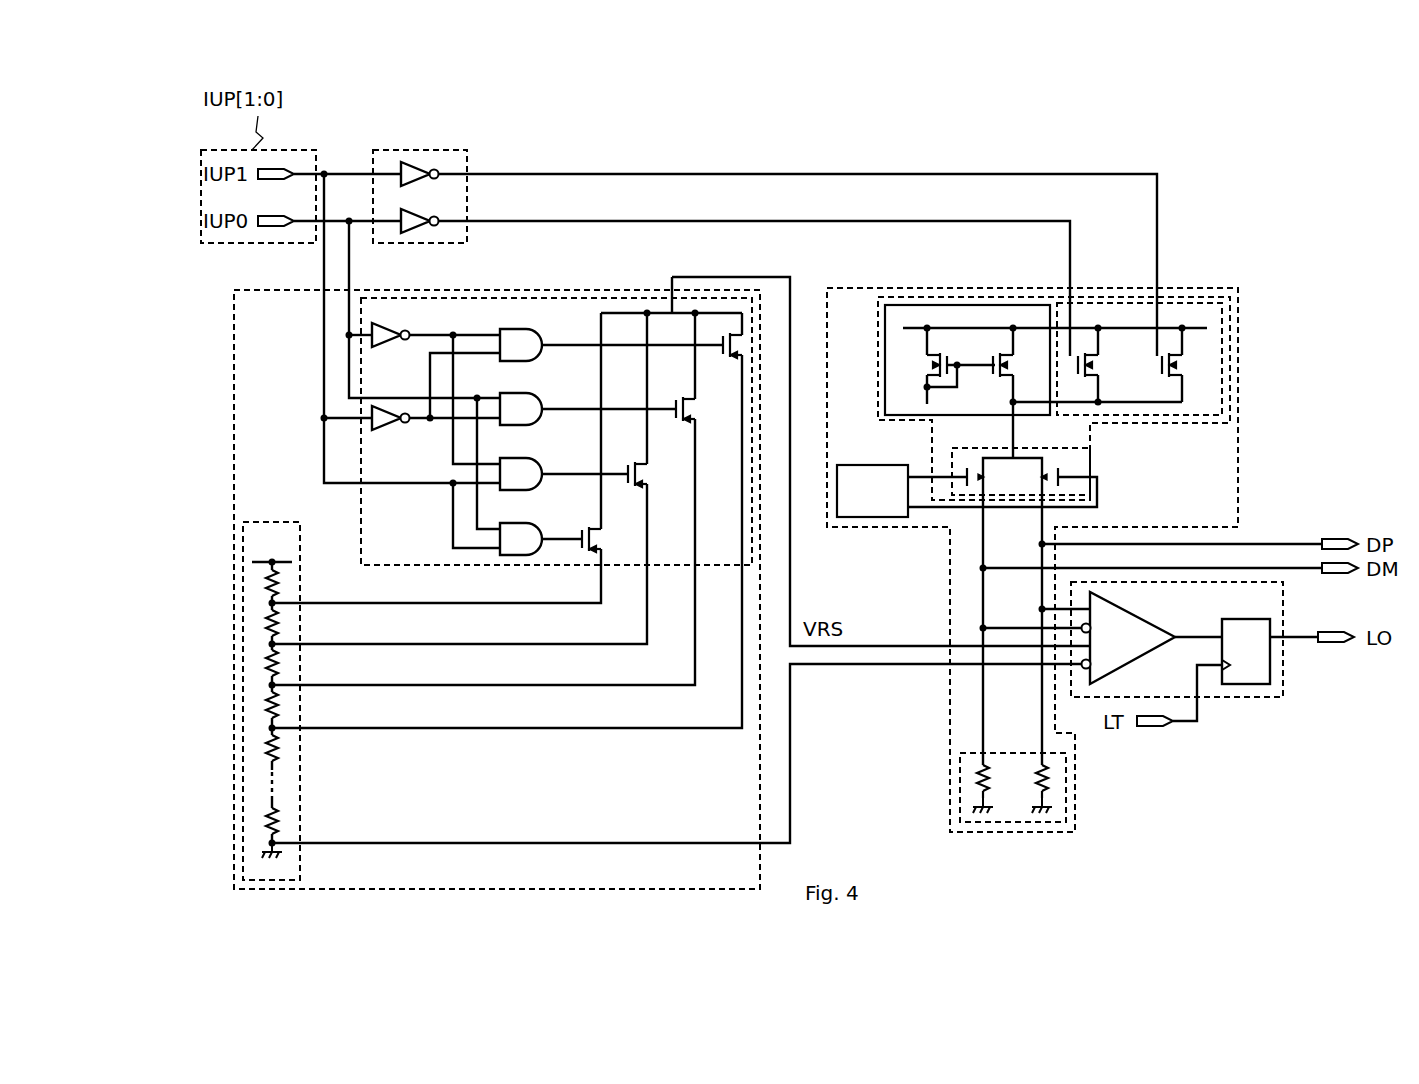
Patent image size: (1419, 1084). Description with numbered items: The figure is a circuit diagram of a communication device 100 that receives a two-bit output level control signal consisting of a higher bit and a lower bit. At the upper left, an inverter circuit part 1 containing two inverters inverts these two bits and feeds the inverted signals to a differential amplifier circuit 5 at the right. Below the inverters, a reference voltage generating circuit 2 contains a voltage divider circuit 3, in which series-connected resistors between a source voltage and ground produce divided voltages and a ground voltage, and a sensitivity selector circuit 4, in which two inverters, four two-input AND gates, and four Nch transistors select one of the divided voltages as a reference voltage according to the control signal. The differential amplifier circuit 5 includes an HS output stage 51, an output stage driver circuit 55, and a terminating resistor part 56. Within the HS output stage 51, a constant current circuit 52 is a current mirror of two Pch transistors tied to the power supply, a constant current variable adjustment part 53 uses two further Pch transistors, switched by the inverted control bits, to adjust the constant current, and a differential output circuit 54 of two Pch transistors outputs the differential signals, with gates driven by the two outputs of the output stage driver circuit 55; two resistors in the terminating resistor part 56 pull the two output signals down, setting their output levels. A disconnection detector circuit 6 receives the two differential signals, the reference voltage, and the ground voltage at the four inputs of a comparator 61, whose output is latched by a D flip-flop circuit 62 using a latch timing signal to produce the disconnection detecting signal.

The communication device 100 is at (797, 108).
The inverter circuit part 1 is at (376, 150).
The reference voltage generating circuit 2 is at (606, 290).
The voltage divider circuit 3 is at (266, 522).
The sensitivity selector circuit 4 is at (644, 298).
The differential amplifier circuit 5 is at (1238, 463).
The disconnection detector circuit 6 is at (1258, 700).
The HS output stage 51 is at (1186, 297).
The constant current circuit 52 is at (887, 305).
The constant current variable adjustment part 53 is at (1222, 318).
The differential output circuit 54 is at (1090, 472).
The output stage driver circuit 55 is at (845, 465).
The terminating resistor part 56 is at (1013, 832).
The comparator 61 is at (1106, 672).
The D flip-flop circuit 62 is at (1272, 677).